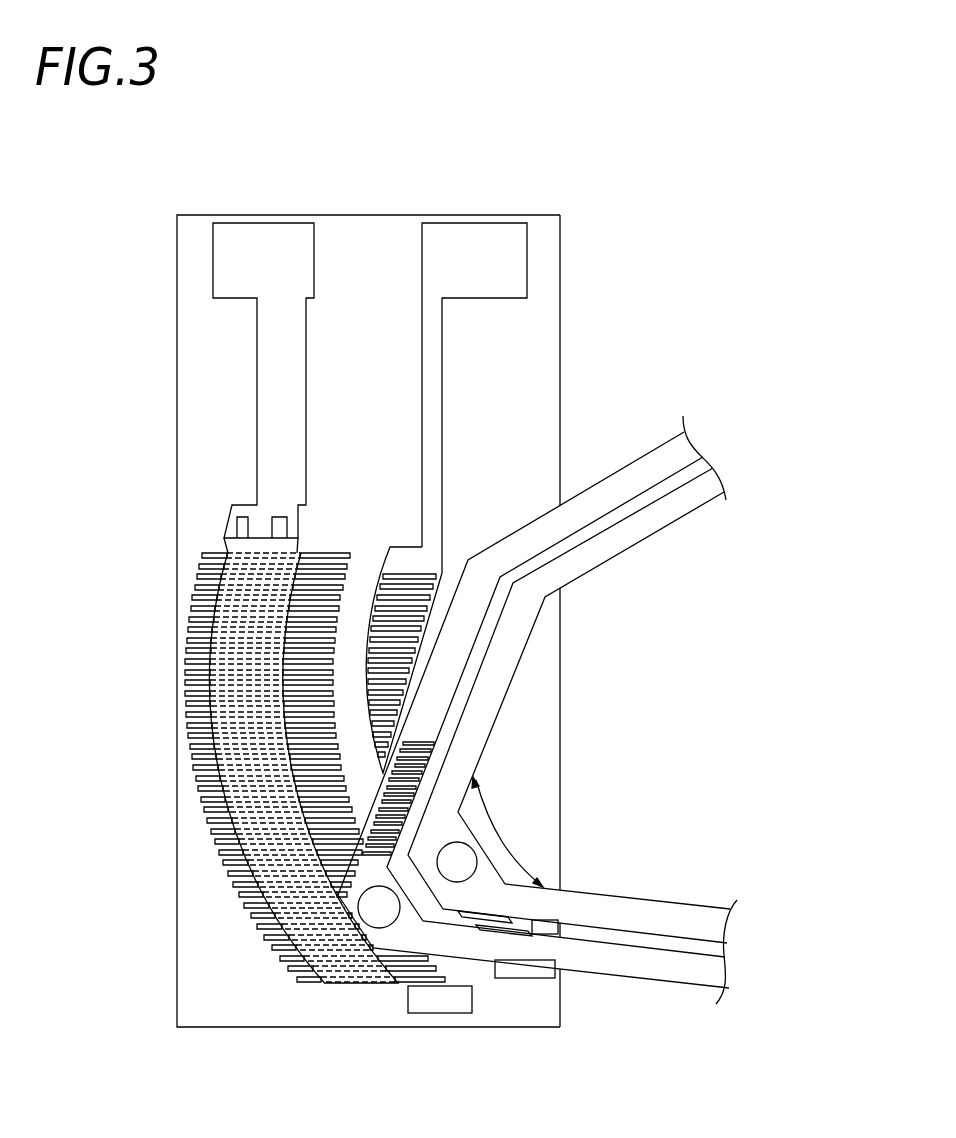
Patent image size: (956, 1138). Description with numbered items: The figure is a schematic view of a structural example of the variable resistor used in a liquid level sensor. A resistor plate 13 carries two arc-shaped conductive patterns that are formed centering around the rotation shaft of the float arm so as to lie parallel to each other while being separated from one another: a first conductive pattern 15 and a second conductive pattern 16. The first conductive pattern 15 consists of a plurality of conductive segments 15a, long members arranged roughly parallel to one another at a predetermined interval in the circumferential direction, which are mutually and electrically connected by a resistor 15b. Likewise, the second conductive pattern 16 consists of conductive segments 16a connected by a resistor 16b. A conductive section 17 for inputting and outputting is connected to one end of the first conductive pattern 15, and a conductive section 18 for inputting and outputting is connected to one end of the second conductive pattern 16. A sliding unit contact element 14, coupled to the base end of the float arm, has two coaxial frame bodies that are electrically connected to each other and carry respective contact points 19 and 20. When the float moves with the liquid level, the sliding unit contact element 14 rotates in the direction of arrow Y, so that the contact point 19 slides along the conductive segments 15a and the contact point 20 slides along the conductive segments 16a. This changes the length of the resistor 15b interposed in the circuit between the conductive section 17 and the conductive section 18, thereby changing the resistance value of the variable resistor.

The resistor plate 13 is at (172, 1025).
The sliding unit contact element 14 is at (537, 710).
The first conductive pattern 15 is at (260, 835).
The conductive segments 15a is at (212, 795).
The resistor 15b is at (364, 984).
The second conductive pattern 16 is at (501, 591).
The conductive segments 16a is at (400, 643).
The resistor 16b is at (400, 722).
The conductive section for inputting/outputting 17 is at (293, 238).
The conductive section for inputting/outputting 18 is at (505, 238).
The contact point 19 is at (385, 906).
The contact point 20 is at (465, 858).